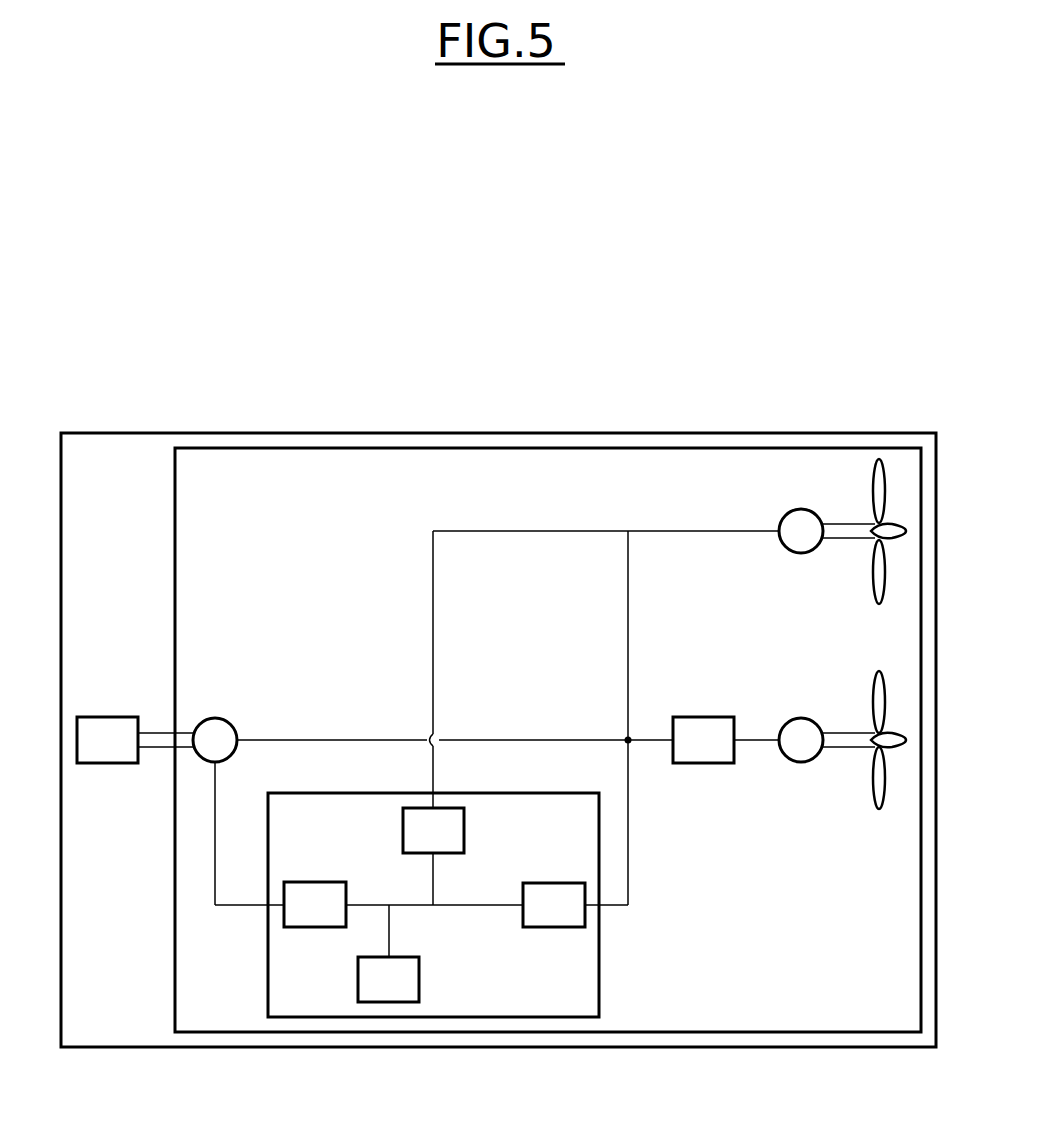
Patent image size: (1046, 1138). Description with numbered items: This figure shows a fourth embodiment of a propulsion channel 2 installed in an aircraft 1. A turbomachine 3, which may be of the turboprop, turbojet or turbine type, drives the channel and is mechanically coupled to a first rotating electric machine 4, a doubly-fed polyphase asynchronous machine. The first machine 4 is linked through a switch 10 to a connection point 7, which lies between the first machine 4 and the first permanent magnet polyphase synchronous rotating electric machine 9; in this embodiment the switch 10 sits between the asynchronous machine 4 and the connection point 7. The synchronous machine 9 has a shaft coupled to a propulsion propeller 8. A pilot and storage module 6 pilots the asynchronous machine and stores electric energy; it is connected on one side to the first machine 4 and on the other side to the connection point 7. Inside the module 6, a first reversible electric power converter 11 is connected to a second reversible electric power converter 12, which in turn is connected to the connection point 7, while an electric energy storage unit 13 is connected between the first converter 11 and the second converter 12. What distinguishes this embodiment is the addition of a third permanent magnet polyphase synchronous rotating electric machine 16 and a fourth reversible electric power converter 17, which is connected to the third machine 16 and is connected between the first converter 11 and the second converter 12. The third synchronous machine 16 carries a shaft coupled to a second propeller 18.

The aircraft 1 is at (500, 433).
The propulsion channel 2 is at (549, 448).
The turbomachine 3 is at (107, 740).
The first rotating electric machine 4 is at (215, 740).
The pilot and storage module 6 is at (600, 972).
The connection point 7 is at (633, 736).
The propulsion propeller 8 is at (880, 671).
The first permanent magnet polyphase synchronous rotating electric machine 9 is at (801, 740).
The switch 10 is at (703, 740).
The first reversible electric power converter 11 is at (315, 904).
The second reversible electric power converter 12 is at (554, 905).
The electric energy storage unit 13 is at (388, 979).
The third permanent magnet polyphase synchronous rotating electric machine 16 is at (801, 531).
The fourth reversible electric power converter 17 is at (433, 830).
The second propeller 18 is at (880, 461).